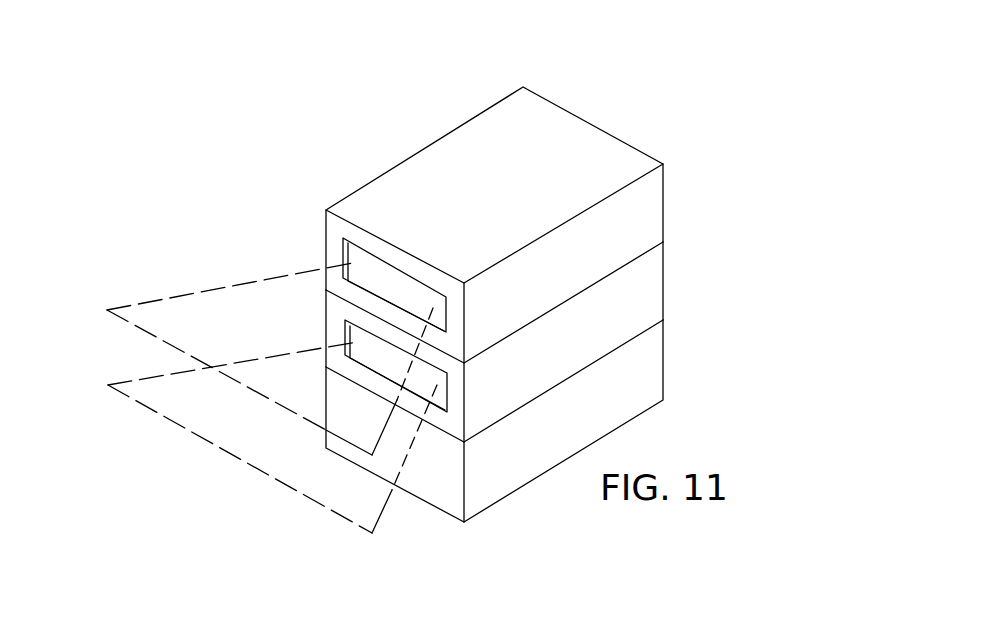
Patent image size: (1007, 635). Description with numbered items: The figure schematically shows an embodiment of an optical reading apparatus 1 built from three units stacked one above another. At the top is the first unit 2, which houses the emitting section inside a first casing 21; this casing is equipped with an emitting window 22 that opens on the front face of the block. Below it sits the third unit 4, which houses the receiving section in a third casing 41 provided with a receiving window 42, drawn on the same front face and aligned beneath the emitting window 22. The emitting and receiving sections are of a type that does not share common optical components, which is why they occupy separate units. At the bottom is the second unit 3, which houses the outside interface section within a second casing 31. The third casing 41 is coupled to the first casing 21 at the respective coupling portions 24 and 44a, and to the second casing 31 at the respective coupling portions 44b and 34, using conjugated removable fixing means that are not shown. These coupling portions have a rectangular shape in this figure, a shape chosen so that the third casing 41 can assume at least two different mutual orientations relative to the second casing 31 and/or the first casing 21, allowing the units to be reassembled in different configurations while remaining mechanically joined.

The optical reading apparatus 1 is at (225, 122).
The first unit 2 is at (554, 225).
The first casing 21 is at (642, 207).
The emitting window 22 is at (355, 262).
The coupling portion 24 is at (570, 288).
The coupling portion 44a is at (663, 241).
The third unit 4 is at (554, 342).
The third casing 41 is at (642, 300).
The receiving window 42 is at (438, 400).
The coupling portion 44b is at (574, 381).
The coupling portion 34 is at (663, 320).
The second unit 3 is at (556, 421).
The second casing 31 is at (628, 368).